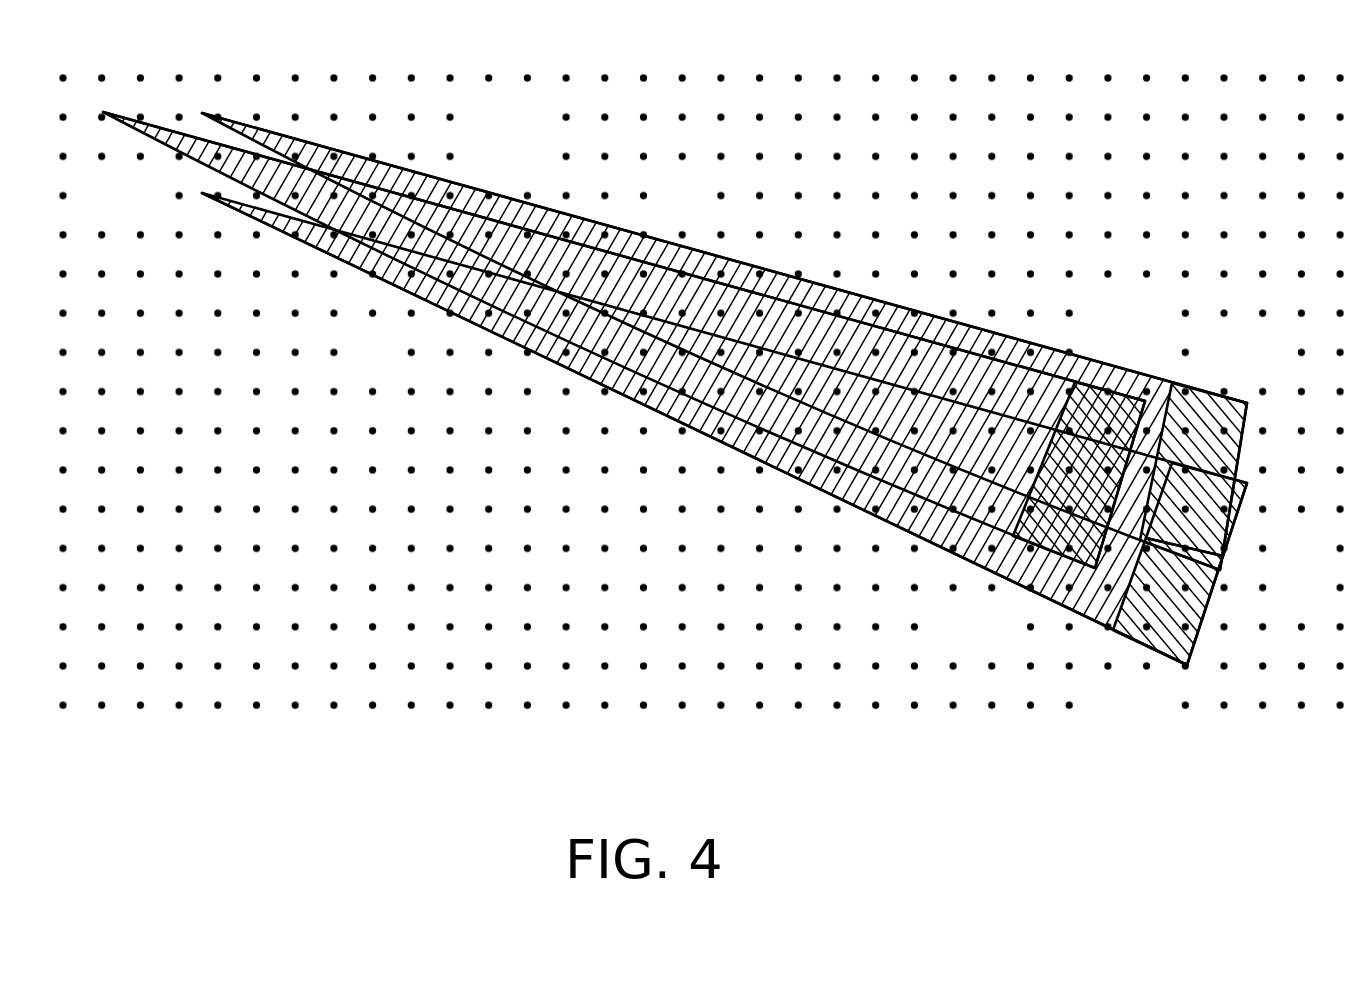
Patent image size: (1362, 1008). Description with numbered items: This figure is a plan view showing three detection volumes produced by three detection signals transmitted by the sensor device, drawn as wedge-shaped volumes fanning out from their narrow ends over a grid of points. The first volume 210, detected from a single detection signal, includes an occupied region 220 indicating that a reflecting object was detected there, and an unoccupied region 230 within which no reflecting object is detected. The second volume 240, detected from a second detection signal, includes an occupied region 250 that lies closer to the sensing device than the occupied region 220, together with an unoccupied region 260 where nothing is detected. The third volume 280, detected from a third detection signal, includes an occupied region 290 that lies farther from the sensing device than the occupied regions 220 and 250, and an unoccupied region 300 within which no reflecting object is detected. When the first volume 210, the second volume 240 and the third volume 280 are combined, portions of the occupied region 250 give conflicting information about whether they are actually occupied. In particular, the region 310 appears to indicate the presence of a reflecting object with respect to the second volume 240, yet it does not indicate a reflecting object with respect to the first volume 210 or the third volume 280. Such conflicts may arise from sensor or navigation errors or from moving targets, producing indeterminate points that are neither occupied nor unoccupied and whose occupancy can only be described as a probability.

The first volume 210 is at (472, 182).
The occupied region 220 is at (1206, 400).
The unoccupied region 230 is at (628, 234).
The second volume 240 is at (163, 128).
The occupied region 250 is at (1092, 388).
The unoccupied region 260 is at (184, 141).
The third volume 280 is at (417, 300).
The occupied region 290 is at (1157, 641).
The unoccupied region 300 is at (995, 565).
The region 310 is at (1097, 493).